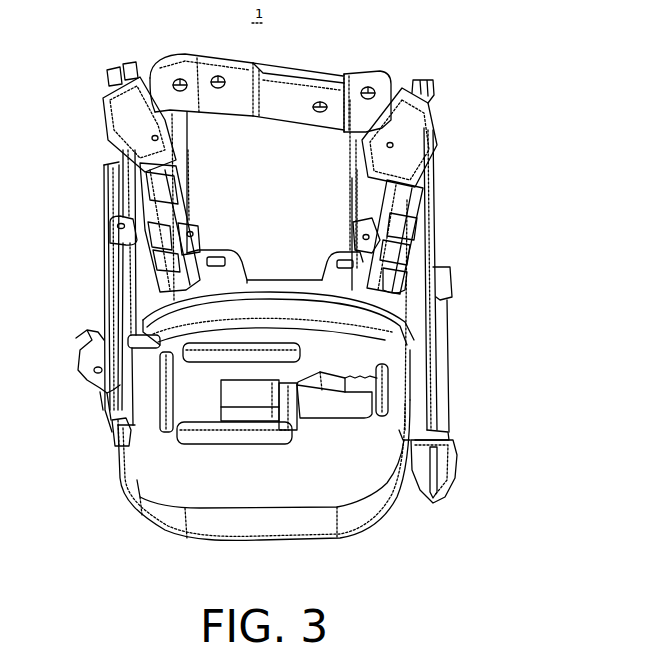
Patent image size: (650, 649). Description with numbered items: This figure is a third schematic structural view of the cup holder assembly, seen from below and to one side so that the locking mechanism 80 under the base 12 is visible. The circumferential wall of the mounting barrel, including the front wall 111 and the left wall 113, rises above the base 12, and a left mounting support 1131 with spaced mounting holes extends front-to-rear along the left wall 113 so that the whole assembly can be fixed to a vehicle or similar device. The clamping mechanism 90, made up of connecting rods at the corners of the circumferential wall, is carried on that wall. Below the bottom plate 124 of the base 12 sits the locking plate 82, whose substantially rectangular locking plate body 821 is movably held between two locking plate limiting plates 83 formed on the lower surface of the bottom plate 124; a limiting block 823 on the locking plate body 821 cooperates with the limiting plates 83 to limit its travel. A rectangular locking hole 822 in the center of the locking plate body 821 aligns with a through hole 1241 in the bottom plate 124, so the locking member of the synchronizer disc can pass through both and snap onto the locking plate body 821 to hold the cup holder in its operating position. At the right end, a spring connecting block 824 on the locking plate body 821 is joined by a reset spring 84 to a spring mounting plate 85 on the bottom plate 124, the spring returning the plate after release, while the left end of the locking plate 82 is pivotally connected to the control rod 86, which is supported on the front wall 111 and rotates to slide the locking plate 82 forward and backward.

The base 12 is at (197, 488).
The bottom plate 124 is at (180, 480).
The through hole 1241 is at (287, 425).
The locking mechanism 80 is at (92, 242).
The locking plate 82 is at (155, 403).
The locking plate body 821 is at (150, 425).
The locking hole 822 is at (252, 402).
The limiting block 823 is at (175, 430).
The spring connecting block 824 is at (332, 405).
The locking plate limiting plate 83 is at (238, 446).
The reset spring 84 is at (434, 348).
The spring mounting plate 85 is at (390, 394).
The control rod 86 is at (96, 287).
The clamping mechanism 90 is at (438, 190).
The front wall 111 is at (108, 170).
The left wall 113 is at (233, 128).
The left mounting support 1131 is at (300, 72).